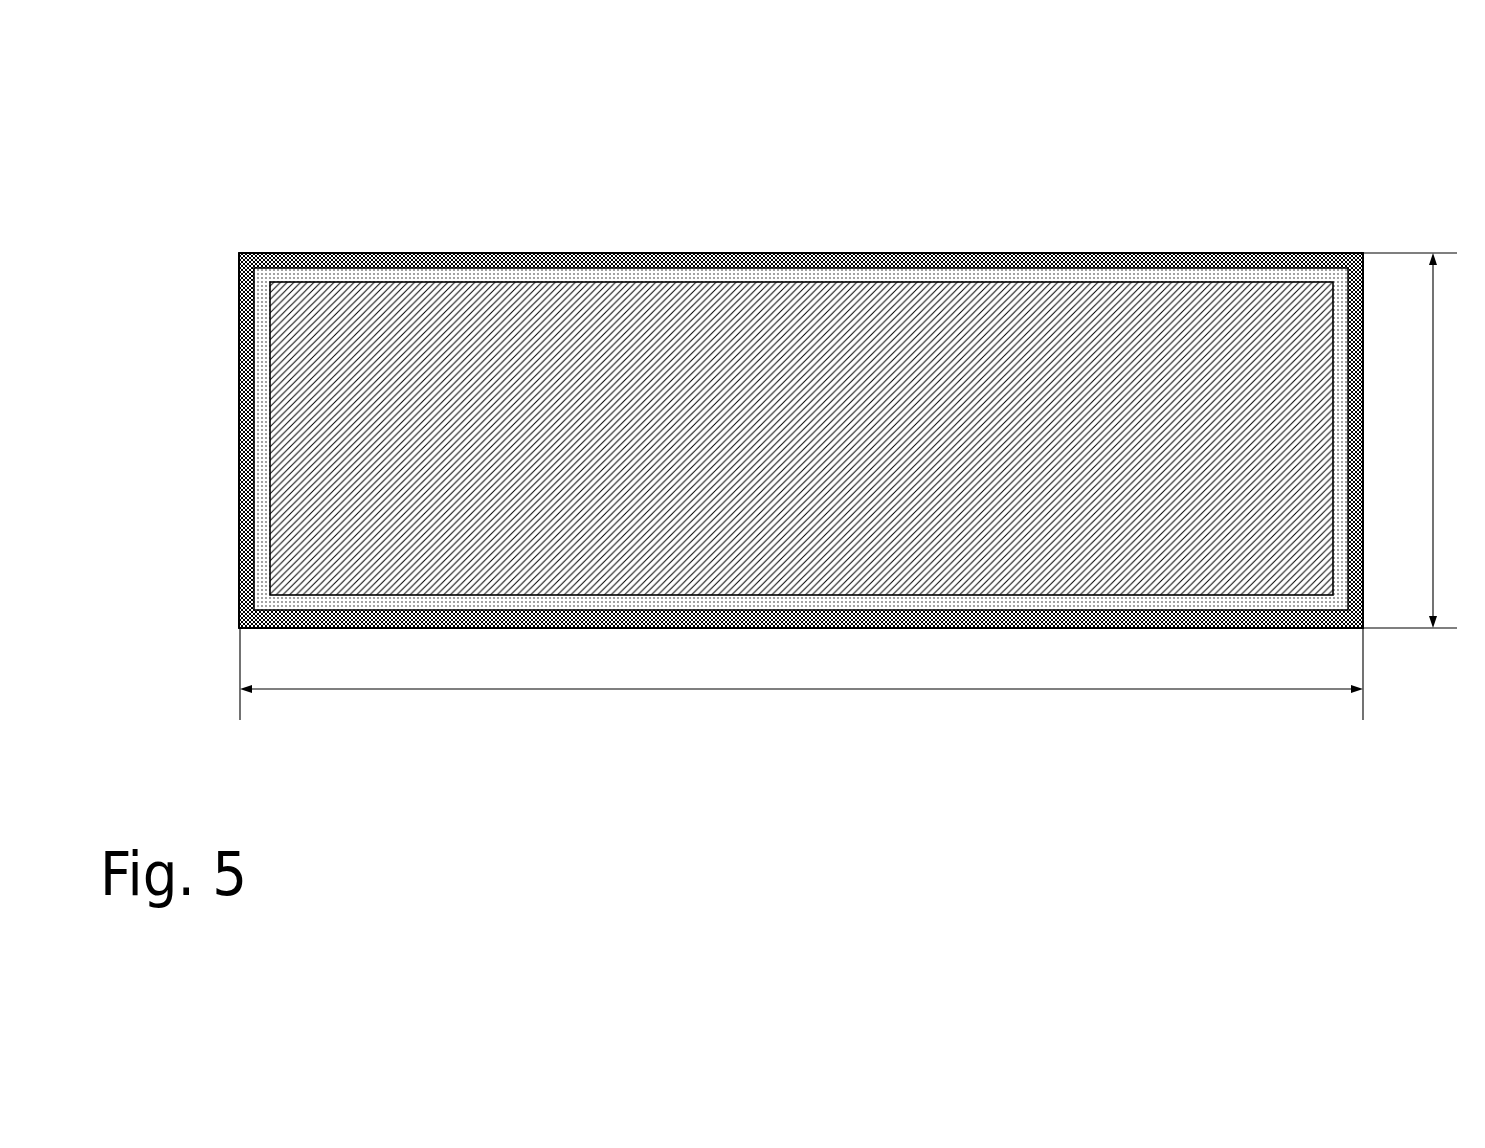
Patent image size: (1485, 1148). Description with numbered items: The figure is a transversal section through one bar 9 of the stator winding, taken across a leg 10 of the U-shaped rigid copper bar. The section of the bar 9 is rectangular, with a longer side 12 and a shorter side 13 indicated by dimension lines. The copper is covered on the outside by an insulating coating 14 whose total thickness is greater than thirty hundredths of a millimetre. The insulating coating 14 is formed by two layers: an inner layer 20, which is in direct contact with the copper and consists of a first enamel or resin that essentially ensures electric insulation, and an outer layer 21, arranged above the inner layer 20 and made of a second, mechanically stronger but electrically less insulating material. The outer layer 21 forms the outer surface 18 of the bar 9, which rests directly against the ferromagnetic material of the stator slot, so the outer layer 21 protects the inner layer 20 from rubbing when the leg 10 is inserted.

The bar 9 is at (1206, 804).
The leg 10 is at (756, 440).
The longer side 12 is at (801, 679).
The shorter side 13 is at (1416, 440).
The insulating coating 14 is at (272, 166).
The outer surface 18 is at (1074, 240).
The inner layer 20 is at (479, 275).
The outer layer 21 is at (1270, 262).